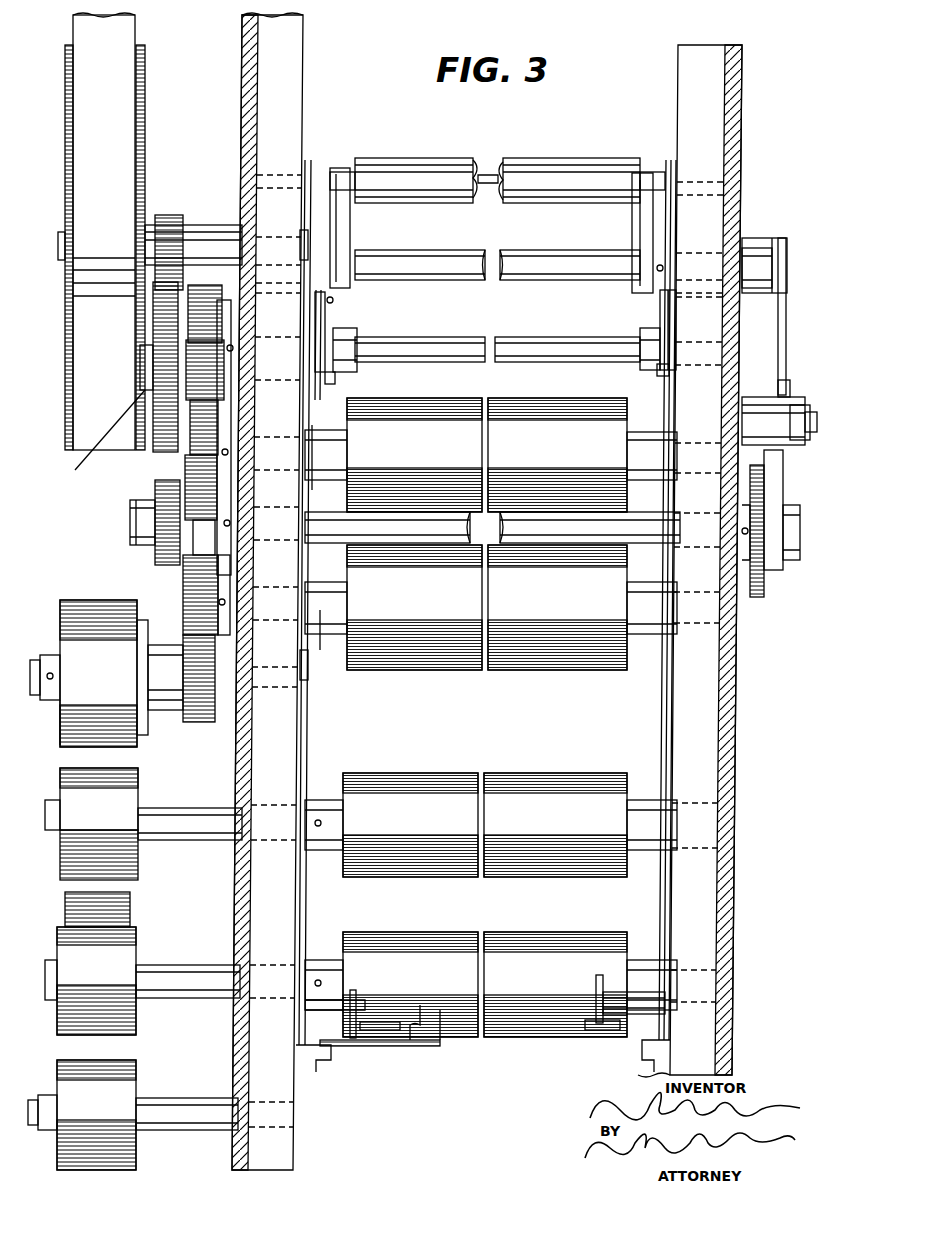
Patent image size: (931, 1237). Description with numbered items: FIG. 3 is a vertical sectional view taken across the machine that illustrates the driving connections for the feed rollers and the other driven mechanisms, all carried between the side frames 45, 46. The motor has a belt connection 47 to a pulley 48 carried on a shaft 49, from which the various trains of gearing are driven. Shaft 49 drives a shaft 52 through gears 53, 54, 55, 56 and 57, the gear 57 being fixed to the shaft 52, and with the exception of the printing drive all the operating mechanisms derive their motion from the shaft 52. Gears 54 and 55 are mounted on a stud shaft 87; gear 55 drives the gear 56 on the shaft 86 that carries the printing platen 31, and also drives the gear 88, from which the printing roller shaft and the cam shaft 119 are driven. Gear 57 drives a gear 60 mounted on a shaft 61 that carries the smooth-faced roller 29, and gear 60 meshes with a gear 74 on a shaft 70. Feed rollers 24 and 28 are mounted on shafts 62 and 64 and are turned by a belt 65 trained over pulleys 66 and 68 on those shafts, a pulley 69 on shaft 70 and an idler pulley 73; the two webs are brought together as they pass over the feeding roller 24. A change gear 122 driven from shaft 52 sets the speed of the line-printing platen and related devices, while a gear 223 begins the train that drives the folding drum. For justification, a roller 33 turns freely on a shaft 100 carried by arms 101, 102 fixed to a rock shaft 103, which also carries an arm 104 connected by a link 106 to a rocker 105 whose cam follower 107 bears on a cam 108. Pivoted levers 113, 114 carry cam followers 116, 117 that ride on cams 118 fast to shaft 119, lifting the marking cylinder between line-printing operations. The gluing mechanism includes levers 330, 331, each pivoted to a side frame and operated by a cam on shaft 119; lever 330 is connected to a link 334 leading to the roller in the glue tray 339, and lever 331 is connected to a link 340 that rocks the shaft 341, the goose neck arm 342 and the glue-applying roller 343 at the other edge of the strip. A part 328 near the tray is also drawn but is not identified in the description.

The feed roller 24 is at (433, 936).
The feed roller 28 is at (447, 780).
The smooth-faced roller 29 is at (491, 607).
The printing platen 31 is at (491, 455).
The roller 33 is at (556, 168).
The side frame 45 is at (242, 78).
The side frame 46 is at (730, 133).
The belt connection 47 is at (115, 127).
The pulley 48 is at (146, 97).
The shaft 49 is at (148, 228).
The shaft 52 is at (130, 522).
The gear 53 is at (172, 230).
The gear 54 is at (150, 448).
The gear 55 is at (208, 378).
The gear 56 is at (216, 412).
The gear 57 is at (188, 471).
The gear 60 is at (183, 605).
The shaft 61 is at (330, 628).
The shaft 62 is at (186, 972).
The shaft 64 is at (184, 820).
The belt 65 is at (81, 599).
The pulley 66 is at (90, 981).
The pulley 68 is at (125, 783).
The pulley 69 is at (62, 725).
The shaft 70 is at (44, 665).
The idler pulley 73 is at (137, 1073).
The gear 74 is at (197, 702).
The shaft 86 is at (325, 428).
The stud shaft 87 is at (103, 443).
The gear 88 is at (222, 305).
The shaft 100 is at (486, 172).
The arm 101 is at (350, 226).
The arm 102 is at (632, 230).
The rock shaft 103 is at (500, 254).
The arm 104 is at (773, 268).
The rocker 105 is at (755, 400).
The link 106 is at (780, 348).
The cam follower 107 is at (806, 384).
The cam 108 is at (783, 490).
The lever 113 is at (325, 298).
The lever 114 is at (660, 300).
The cam follower 116 is at (347, 346).
The cam follower 117 is at (640, 377).
The cam 118 is at (337, 380).
The shaft 119 is at (442, 348).
The gear 122 is at (155, 560).
The gear 223 is at (758, 598).
The bracket 328 is at (385, 1032).
The lever 330 is at (296, 320).
The lever 331 is at (672, 310).
The link 334 is at (305, 752).
The tray 339 is at (426, 1022).
The link 340 is at (663, 728).
The shaft 341 is at (610, 990).
The goose neck arm 342 is at (600, 992).
The roller 343 is at (578, 1032).